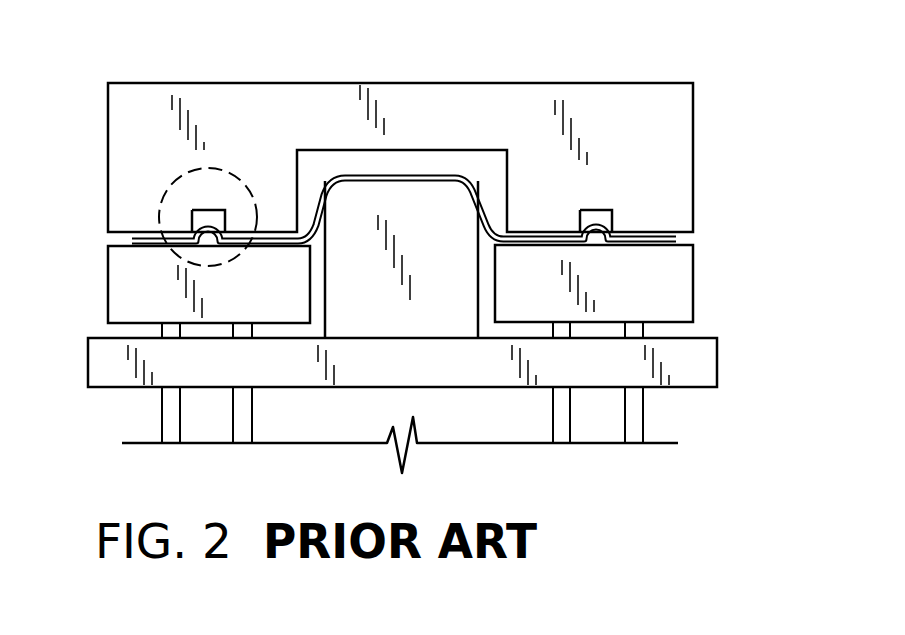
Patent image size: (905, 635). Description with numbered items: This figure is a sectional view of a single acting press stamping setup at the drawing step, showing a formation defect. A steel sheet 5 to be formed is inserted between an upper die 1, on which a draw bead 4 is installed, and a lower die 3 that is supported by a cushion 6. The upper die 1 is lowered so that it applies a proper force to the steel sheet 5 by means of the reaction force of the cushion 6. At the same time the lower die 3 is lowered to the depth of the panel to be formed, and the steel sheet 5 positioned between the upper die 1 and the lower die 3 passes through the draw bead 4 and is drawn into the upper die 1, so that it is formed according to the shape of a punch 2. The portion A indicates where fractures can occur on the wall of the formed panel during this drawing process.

The upper die 1 is at (673, 145).
The punch 2 is at (423, 325).
The lower die 3 is at (682, 297).
The draw bead 4 is at (175, 182).
The steel sheet 5 is at (370, 177).
The cushion 6 is at (162, 440).
The portion A is at (493, 203).